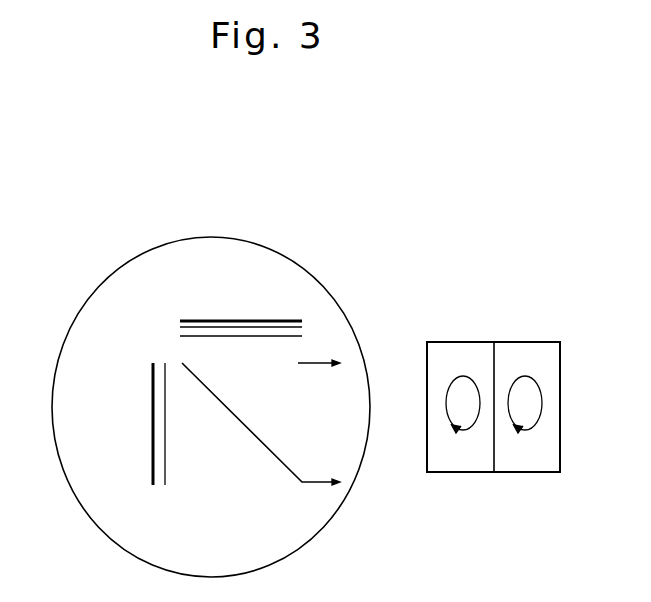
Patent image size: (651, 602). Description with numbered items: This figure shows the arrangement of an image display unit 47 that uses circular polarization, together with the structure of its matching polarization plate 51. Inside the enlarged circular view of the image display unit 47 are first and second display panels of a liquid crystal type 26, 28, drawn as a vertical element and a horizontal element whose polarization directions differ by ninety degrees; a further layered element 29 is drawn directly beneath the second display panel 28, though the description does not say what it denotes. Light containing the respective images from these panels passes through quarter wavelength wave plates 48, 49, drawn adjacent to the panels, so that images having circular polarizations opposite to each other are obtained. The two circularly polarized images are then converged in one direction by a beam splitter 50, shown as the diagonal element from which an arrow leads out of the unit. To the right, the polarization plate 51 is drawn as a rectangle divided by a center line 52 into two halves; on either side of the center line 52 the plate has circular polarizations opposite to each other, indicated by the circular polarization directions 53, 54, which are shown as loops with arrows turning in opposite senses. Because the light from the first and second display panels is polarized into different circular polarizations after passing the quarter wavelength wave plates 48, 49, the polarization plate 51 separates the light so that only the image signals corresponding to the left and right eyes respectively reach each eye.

The image display unit 47 is at (68, 340).
The second display panel of a liquid crystal type 28 is at (240, 321).
The lower waveguide layer 29 is at (180, 327).
The quarter wavelength wave plate 49 is at (292, 337).
The first display panel of a liquid crystal type 26 is at (153, 438).
The quarter wavelength wave plate 48 is at (165, 460).
The beam splitter 50 is at (280, 463).
The polarization plate 51 is at (459, 342).
The center line 52 is at (496, 362).
The circular polarization direction 53 is at (438, 463).
The circular polarization direction 54 is at (510, 455).